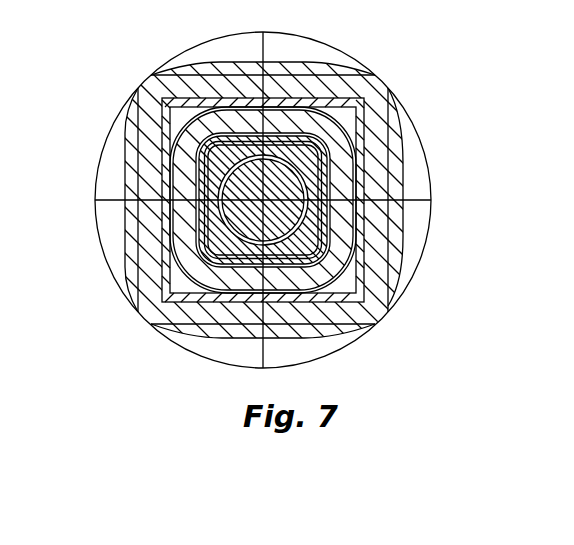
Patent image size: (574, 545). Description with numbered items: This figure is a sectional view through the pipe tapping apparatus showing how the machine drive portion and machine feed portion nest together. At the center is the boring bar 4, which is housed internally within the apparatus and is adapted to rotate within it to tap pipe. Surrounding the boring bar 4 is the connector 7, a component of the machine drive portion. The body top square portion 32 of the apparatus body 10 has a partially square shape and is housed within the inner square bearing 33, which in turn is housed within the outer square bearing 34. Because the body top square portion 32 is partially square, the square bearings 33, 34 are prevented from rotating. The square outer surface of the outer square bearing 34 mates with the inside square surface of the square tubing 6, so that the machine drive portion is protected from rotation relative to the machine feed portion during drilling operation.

The boring bar 4 is at (240, 210).
The square tubing 6 is at (168, 300).
The connector 7 is at (362, 92).
The apparatus body 10 is at (174, 103).
The body top square portion 32 is at (180, 198).
The inner square bearing 33 is at (360, 157).
The outer square bearing 34 is at (375, 260).